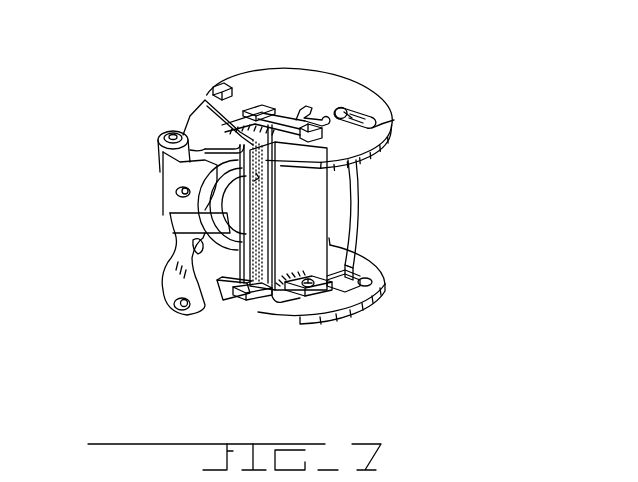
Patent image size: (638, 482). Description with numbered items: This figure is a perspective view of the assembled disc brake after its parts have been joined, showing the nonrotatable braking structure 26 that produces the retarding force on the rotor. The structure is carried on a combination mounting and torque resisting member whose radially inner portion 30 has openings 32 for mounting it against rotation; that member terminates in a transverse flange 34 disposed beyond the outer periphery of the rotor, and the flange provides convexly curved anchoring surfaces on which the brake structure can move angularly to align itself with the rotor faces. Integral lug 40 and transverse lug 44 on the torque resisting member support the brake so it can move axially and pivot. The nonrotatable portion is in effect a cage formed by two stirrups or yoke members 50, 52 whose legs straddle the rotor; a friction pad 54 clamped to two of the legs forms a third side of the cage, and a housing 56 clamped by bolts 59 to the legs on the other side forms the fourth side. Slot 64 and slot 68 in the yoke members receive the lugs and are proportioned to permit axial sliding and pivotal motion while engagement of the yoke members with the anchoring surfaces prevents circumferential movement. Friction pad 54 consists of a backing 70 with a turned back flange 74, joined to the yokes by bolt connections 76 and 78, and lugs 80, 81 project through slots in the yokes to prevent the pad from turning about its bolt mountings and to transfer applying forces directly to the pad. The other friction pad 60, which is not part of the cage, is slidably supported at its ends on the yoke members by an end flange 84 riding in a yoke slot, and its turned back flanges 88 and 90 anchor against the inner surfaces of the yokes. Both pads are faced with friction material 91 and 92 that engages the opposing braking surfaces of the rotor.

The nonrotatable braking structure 26 is at (194, 100).
The radially inner portion 30 is at (190, 233).
The openings 32 is at (178, 196).
The transverse flange 34 is at (340, 182).
The lug 40 is at (253, 106).
The lug 44 is at (352, 110).
The yoke member 50 is at (378, 268).
The yoke member 52 is at (343, 86).
The friction pad 54 is at (300, 224).
The housing 56 is at (194, 120).
The bolts 59 is at (213, 90).
The friction pad 60 is at (238, 200).
The slot 64 is at (281, 108).
The slot 68 is at (360, 118).
The backing 70 is at (313, 247).
The turned back flange 74 is at (323, 295).
The bolt connection 76 is at (302, 296).
The bolt connection 78 is at (384, 128).
The lug 80 is at (270, 305).
The lug 81 is at (329, 121).
The end flange 84 is at (270, 114).
The turned back flange 88 is at (232, 284).
The turned back flange 90 is at (237, 135).
The friction material 91 is at (257, 180).
The friction material 92 is at (244, 294).